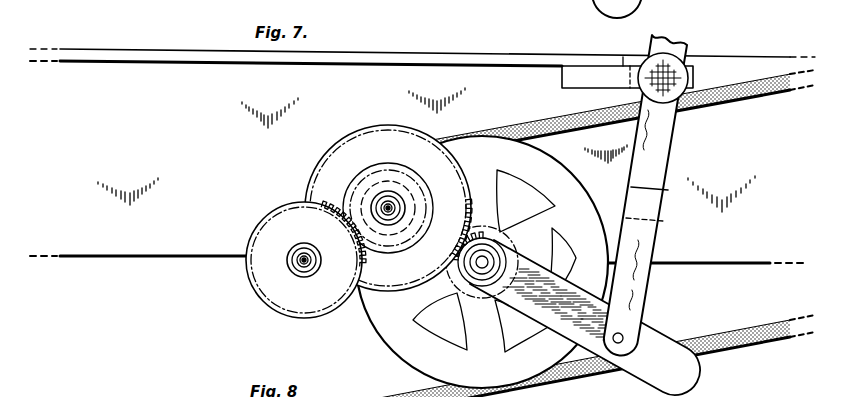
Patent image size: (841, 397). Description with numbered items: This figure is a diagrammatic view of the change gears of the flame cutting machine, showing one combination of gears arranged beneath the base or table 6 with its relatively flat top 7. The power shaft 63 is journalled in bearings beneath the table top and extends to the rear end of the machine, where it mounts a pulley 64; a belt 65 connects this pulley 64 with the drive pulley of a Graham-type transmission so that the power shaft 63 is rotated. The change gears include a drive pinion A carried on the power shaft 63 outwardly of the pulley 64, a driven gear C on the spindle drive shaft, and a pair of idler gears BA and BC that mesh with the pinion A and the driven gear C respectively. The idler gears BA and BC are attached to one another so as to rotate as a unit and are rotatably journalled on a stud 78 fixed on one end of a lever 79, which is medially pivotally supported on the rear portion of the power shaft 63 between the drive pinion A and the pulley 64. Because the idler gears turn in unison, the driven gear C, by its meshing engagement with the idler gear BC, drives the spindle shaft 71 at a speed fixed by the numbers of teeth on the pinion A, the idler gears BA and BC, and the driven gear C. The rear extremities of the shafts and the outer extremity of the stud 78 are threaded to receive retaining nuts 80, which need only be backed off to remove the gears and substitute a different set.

The base or table 6 is at (103, 74).
The flat top 7 is at (180, 47).
The idler gear BA is at (379, 122).
The idler gear BC is at (389, 175).
The stud 78 is at (386, 206).
The spindle shaft 71 is at (300, 256).
The retaining nuts 80 is at (391, 226).
The driven gear C is at (251, 296).
The pulley 64 is at (389, 335).
The power shaft 63 is at (468, 270).
The lever 79 is at (532, 310).
The drive pinion A is at (482, 262).
The belt 65 is at (714, 331).